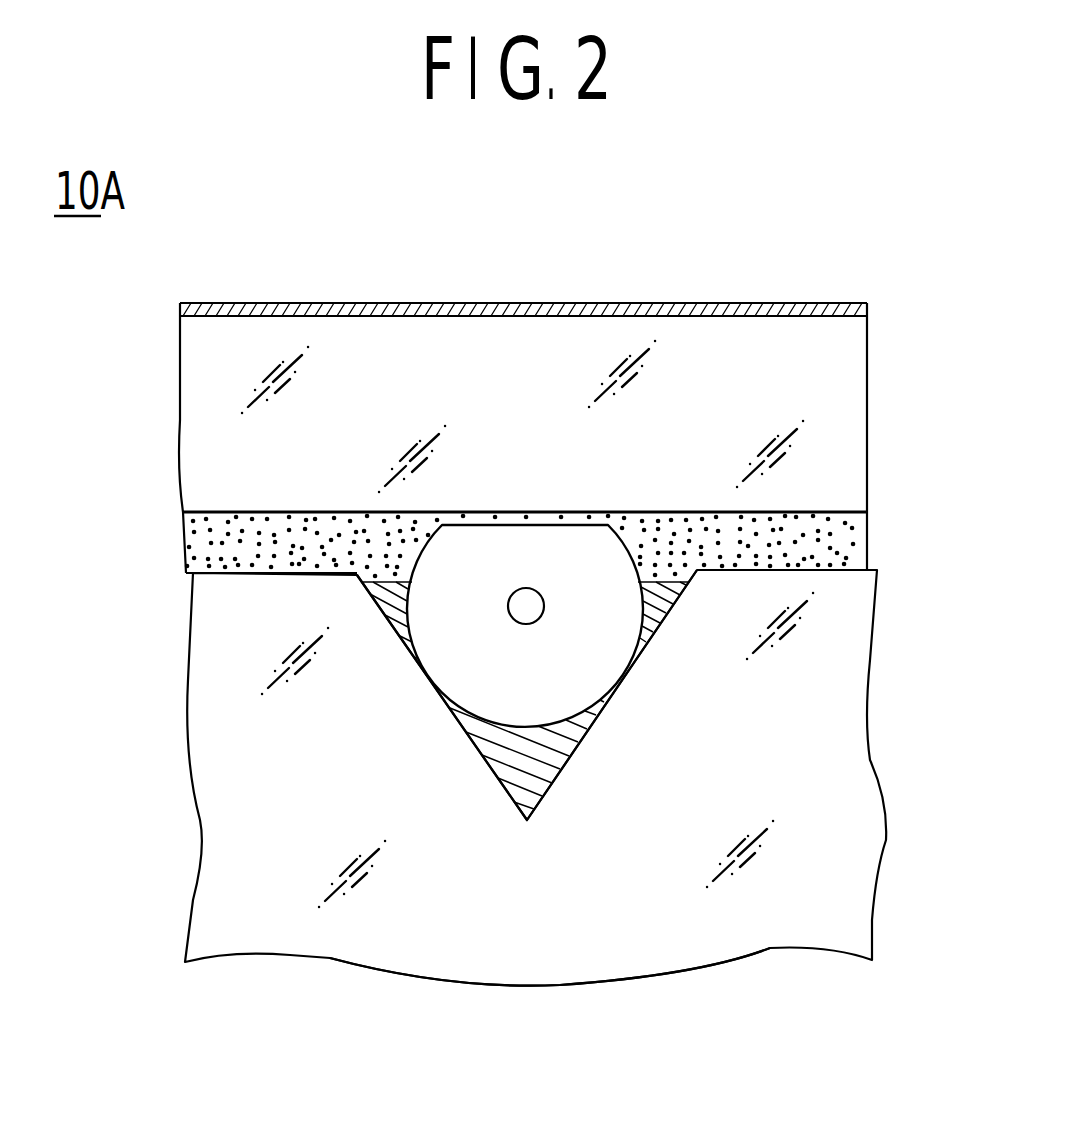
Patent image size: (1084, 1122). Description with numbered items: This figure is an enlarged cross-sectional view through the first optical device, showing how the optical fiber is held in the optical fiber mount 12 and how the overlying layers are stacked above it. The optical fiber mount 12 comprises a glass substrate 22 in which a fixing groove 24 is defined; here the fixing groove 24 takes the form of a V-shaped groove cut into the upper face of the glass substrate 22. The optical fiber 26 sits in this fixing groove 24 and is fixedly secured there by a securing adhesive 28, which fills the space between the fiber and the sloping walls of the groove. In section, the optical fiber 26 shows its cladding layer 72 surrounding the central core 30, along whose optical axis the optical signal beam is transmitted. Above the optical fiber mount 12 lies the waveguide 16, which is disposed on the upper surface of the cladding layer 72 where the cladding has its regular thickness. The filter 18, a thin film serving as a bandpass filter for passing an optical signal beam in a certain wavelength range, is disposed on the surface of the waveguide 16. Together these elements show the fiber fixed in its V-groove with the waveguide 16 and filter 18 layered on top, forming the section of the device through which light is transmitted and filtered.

The optical fiber mount 12 is at (193, 856).
The waveguide 16 is at (807, 370).
The filter 18 is at (763, 302).
The glass substrate 22 is at (357, 950).
The fixing groove 24 is at (510, 763).
The optical fiber 26 is at (402, 628).
The securing adhesive 28 is at (548, 786).
The core 30 is at (529, 614).
The cladding layer 72 is at (595, 682).